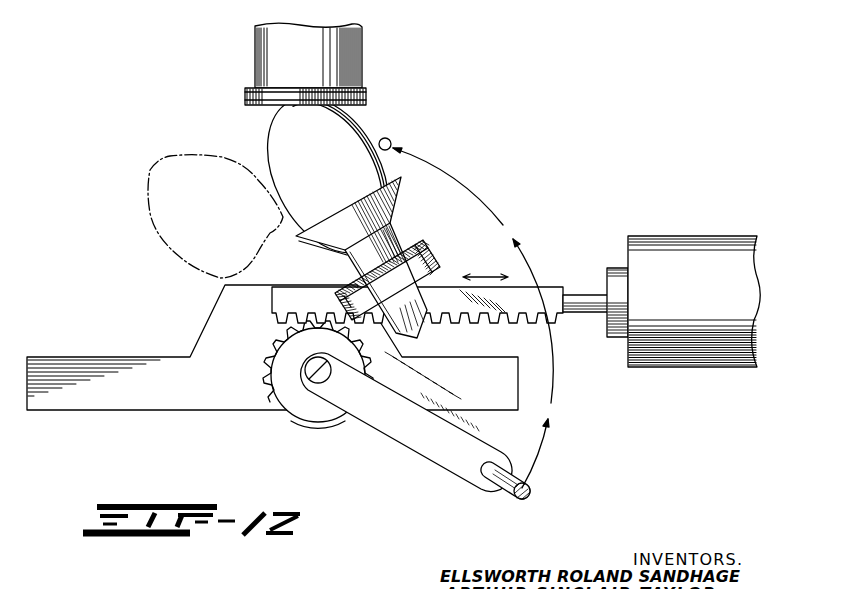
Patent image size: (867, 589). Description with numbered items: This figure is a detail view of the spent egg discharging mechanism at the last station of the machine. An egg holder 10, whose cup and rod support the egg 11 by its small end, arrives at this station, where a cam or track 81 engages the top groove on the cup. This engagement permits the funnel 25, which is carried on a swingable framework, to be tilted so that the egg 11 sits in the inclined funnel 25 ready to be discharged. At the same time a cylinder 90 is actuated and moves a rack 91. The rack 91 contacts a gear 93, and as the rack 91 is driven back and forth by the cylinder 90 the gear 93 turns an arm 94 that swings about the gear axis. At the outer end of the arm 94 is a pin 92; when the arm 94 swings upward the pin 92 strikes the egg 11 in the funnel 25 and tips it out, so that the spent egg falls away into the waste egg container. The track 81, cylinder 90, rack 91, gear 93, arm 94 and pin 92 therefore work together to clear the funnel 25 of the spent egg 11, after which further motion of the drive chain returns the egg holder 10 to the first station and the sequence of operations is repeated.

The egg holder 10 is at (363, 60).
The egg 11 is at (360, 118).
The funnel 25 is at (397, 200).
The cam or track 81 is at (175, 357).
The cylinder 90 is at (676, 237).
The rack 91 is at (442, 288).
The pin 92 is at (530, 489).
The gear 93 is at (277, 340).
The arm 94 is at (372, 428).